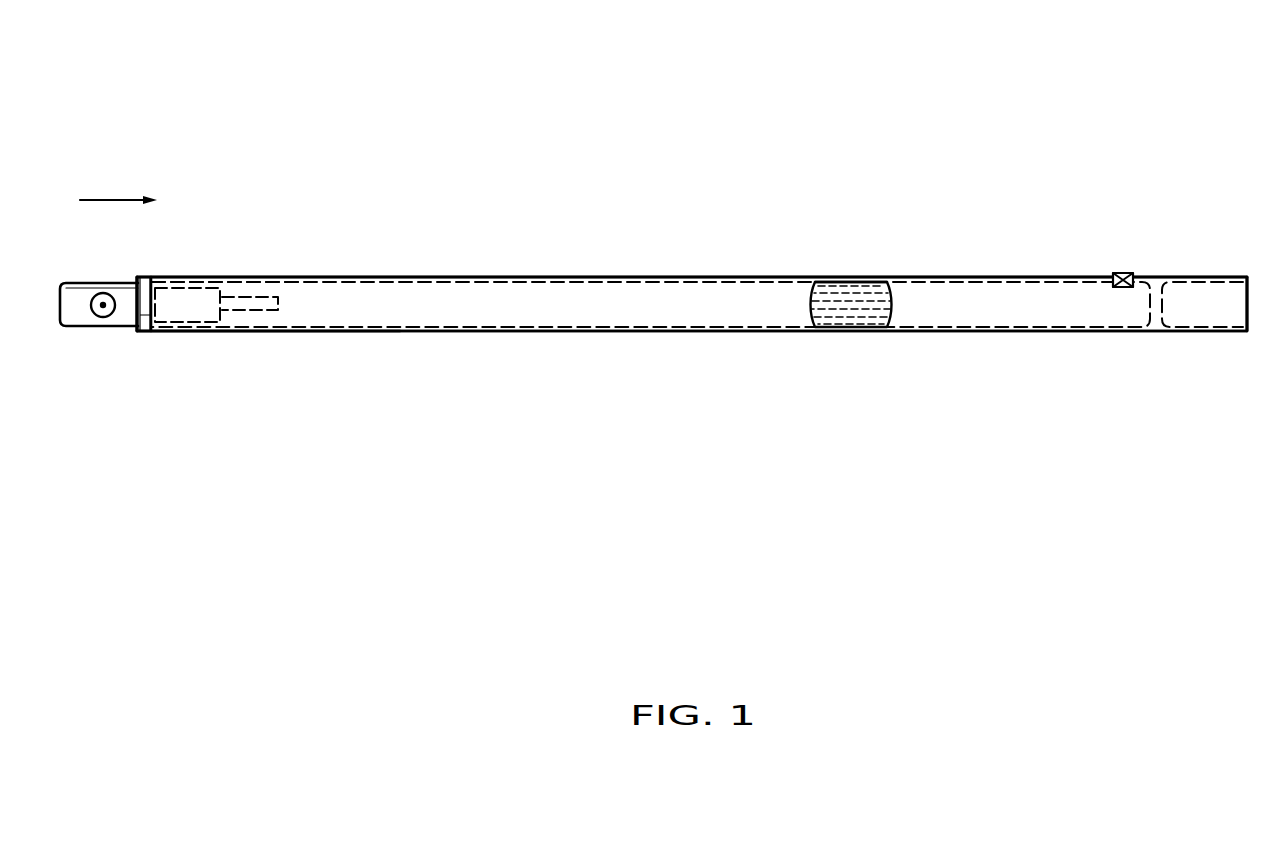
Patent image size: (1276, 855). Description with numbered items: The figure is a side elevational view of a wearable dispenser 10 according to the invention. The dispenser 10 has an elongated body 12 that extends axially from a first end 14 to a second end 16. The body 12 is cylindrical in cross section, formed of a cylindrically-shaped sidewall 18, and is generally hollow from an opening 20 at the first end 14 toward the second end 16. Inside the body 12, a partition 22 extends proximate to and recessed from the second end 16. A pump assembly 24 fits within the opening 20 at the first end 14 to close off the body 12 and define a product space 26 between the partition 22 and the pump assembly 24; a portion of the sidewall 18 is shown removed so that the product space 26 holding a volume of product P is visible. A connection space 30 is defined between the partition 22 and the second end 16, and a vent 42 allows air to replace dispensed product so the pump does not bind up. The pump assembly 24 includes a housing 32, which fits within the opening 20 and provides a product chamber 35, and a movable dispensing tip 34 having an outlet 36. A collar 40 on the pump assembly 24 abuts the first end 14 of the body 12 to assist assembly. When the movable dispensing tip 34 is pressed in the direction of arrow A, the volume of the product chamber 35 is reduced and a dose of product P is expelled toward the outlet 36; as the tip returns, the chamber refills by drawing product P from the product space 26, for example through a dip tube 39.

The wearable dispenser 10 is at (835, 130).
The body 12 is at (495, 340).
The first end 14 is at (148, 332).
The second end 16 is at (1247, 331).
The sidewall 18 is at (690, 277).
The opening 20 is at (163, 284).
The partition 22 is at (308, 288).
The pump assembly 24 is at (134, 340).
The product space 26 is at (857, 320).
The connection space 30 is at (1195, 297).
The housing 32 is at (224, 338).
The movable dispensing tip 34 is at (68, 284).
The product chamber 35 is at (180, 295).
The outlet 36 is at (103, 303).
The dip tube 39 is at (245, 308).
The collar 40 is at (147, 290).
The vent 42 is at (1121, 273).
The product P is at (840, 290).
The arrow A is at (98, 200).